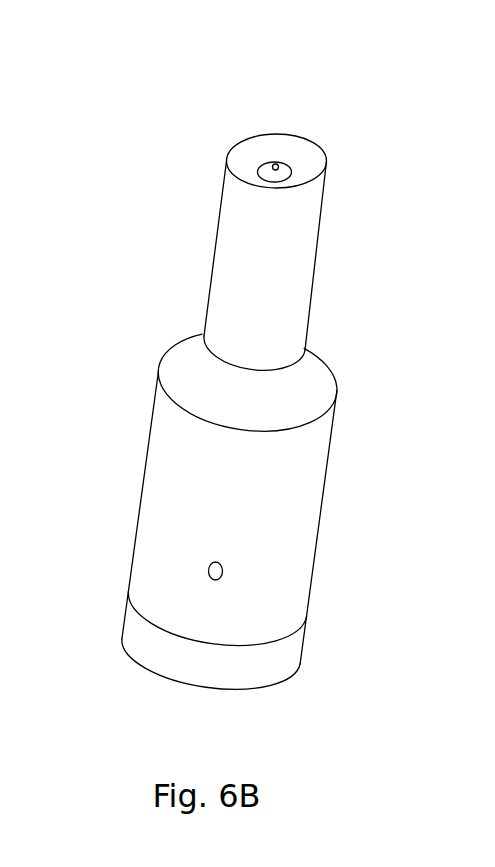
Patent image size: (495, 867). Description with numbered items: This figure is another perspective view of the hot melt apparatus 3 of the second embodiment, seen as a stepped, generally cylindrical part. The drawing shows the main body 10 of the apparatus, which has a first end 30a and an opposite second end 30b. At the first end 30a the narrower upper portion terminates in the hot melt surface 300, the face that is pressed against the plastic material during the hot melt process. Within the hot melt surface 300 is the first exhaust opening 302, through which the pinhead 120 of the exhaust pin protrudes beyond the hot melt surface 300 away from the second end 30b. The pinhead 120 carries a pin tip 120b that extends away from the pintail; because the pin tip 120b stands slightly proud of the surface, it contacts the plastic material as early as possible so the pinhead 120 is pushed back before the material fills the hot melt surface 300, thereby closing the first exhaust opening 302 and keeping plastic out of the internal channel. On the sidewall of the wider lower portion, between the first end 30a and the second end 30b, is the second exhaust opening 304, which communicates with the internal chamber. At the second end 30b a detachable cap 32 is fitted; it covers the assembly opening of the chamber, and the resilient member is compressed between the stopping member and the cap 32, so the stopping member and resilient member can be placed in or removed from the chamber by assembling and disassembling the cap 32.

The hot melt apparatus 3 is at (195, 95).
The body 10 is at (303, 478).
The first end 30a is at (314, 133).
The second end 30b is at (188, 700).
The cap 32 is at (290, 649).
The pinhead 120 is at (258, 168).
The pin tip 120b is at (276, 166).
The hot melt surface 300 is at (308, 180).
The first exhaust opening 302 is at (295, 169).
The second exhaust opening 304 is at (210, 563).